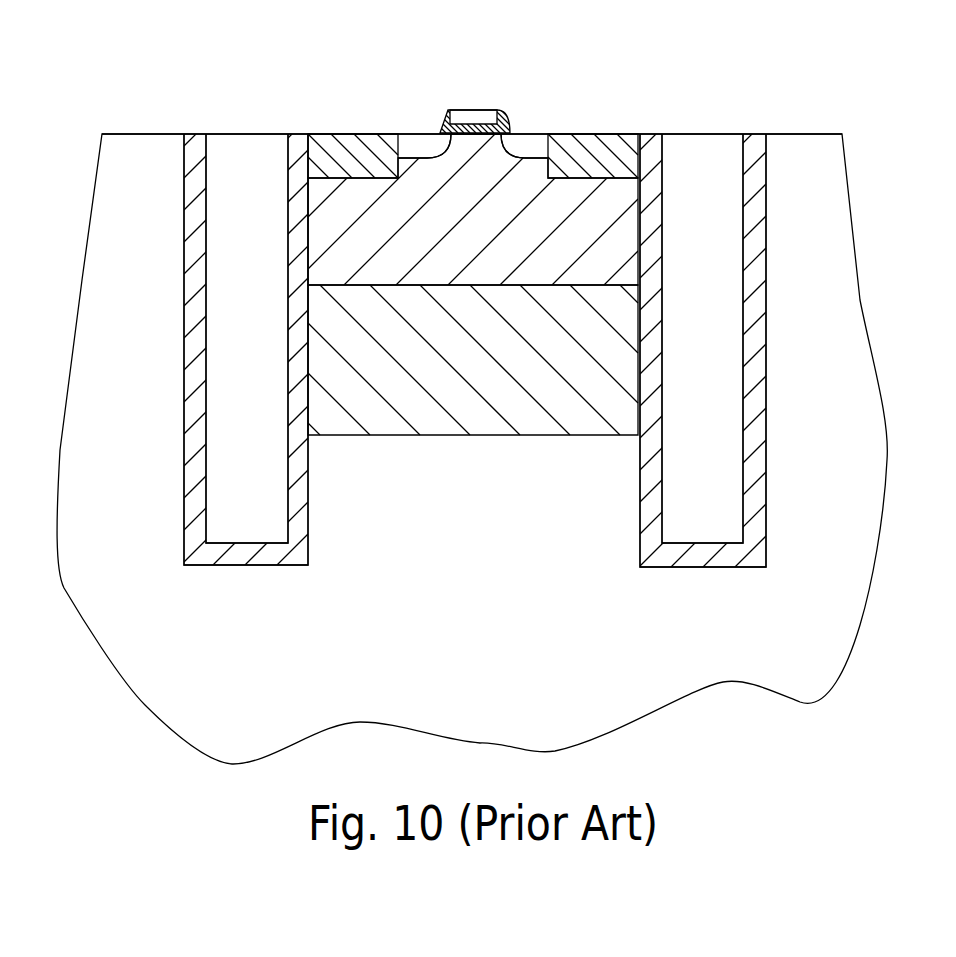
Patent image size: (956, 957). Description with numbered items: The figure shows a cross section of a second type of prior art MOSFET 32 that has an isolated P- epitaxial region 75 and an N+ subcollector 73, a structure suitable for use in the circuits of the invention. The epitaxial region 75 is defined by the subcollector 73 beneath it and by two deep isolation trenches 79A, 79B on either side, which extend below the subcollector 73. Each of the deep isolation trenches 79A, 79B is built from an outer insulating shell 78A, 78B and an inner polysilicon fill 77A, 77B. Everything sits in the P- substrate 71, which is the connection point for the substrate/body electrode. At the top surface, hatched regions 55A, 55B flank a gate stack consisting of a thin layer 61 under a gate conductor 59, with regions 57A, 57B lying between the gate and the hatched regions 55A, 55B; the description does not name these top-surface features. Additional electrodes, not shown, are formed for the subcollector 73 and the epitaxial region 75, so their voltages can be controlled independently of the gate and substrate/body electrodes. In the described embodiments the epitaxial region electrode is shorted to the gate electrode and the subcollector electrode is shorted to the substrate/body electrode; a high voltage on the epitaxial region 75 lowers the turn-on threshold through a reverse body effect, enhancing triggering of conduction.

The prior art MOSFET 32 is at (238, 82).
The source region 55A is at (355, 142).
The source region 55B is at (605, 140).
The lightly doped region 57A is at (413, 142).
The lightly doped region 57B is at (530, 143).
The gate electrode 59 is at (480, 110).
The gate oxide 61 is at (444, 124).
The substrate 71 is at (452, 604).
The N+ subcollector 73 is at (448, 371).
The P- epitaxial region 75 is at (448, 254).
The inner polysilicon fill 77A is at (226, 362).
The inner polysilicon fill 77B is at (683, 362).
The outer insulating shell 78A is at (302, 510).
The outer insulating shell 78B is at (643, 502).
The deep isolation trench 79A is at (172, 507).
The deep isolation trench 79B is at (775, 518).